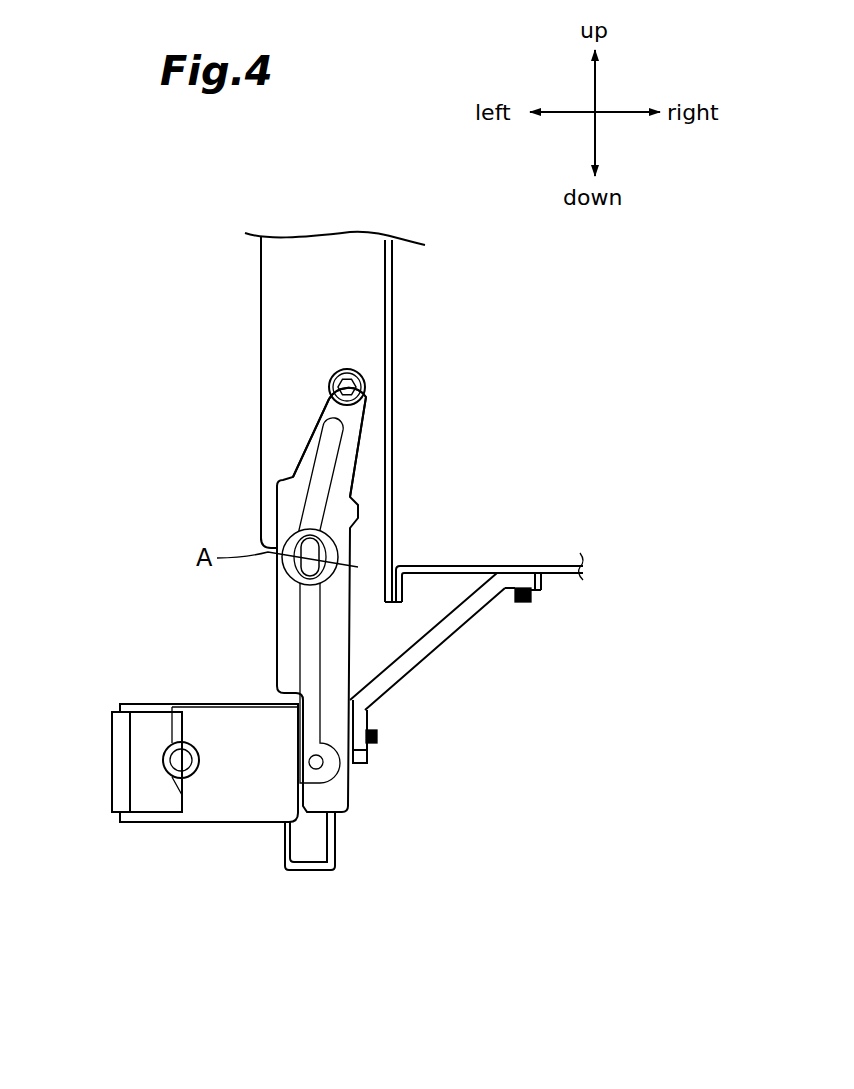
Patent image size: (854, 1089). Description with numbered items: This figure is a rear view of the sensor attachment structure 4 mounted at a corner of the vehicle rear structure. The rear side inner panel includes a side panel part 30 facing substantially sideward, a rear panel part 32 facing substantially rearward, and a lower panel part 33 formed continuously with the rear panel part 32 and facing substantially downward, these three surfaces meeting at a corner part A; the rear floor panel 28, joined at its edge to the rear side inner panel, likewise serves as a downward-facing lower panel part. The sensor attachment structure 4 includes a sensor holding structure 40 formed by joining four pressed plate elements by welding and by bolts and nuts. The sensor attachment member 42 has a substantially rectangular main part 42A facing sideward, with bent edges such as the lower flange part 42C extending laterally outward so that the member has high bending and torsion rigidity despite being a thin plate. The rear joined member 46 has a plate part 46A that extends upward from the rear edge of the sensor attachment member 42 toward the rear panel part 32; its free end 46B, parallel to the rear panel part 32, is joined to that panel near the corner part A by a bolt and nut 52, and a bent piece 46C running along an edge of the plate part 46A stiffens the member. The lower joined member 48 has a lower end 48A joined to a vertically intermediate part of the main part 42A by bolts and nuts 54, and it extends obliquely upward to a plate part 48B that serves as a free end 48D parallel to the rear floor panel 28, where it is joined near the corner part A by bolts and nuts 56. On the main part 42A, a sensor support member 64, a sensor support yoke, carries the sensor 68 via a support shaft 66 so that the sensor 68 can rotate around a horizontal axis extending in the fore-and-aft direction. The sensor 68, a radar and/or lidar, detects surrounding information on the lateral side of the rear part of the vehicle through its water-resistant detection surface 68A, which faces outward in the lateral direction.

The sensor attachment structure 4 is at (348, 872).
The rear floor panel 28 is at (566, 575).
The side panel part 30 is at (260, 378).
The rear panel part 32 is at (266, 282).
The lower panel part 33 is at (379, 580).
The sensor holding structure 40 is at (280, 842).
The sensor attachment member 42 is at (348, 828).
The main part 42A is at (338, 843).
The lower flange part 42C is at (300, 870).
The rear joined member 46 is at (276, 620).
The plate part 46A is at (295, 652).
The free end 46B is at (344, 465).
The bent piece 46C is at (363, 400).
The lower joined member 48 is at (445, 652).
The lower end 48A is at (368, 751).
The plate part 48B is at (538, 592).
The free end 48D is at (585, 622).
The bolt and nut 52 is at (346, 380).
The bolts and nuts 54 is at (376, 731).
The bolts and nuts 56 is at (520, 604).
The sensor support member 64 is at (210, 785).
The support shaft 66 is at (181, 758).
The sensor 68 is at (146, 740).
The detection surface 68A is at (120, 788).